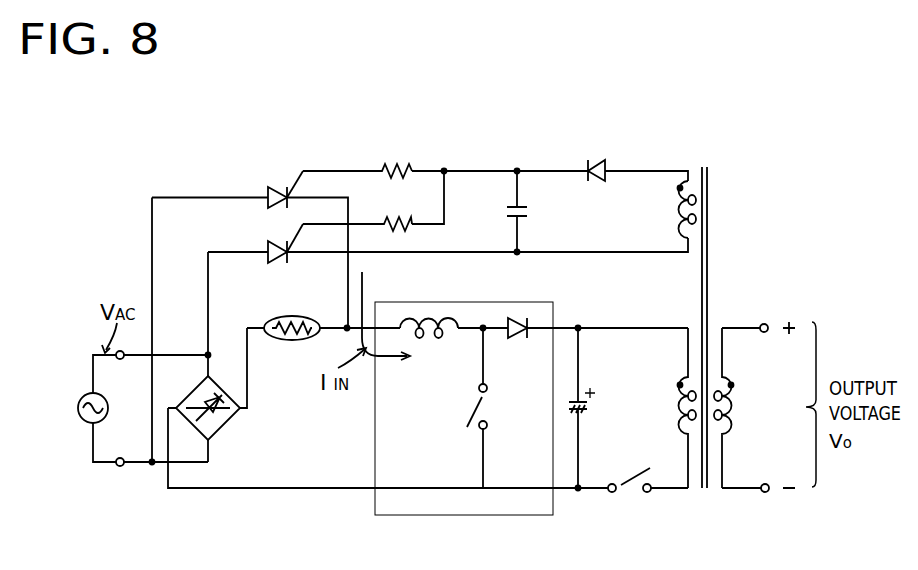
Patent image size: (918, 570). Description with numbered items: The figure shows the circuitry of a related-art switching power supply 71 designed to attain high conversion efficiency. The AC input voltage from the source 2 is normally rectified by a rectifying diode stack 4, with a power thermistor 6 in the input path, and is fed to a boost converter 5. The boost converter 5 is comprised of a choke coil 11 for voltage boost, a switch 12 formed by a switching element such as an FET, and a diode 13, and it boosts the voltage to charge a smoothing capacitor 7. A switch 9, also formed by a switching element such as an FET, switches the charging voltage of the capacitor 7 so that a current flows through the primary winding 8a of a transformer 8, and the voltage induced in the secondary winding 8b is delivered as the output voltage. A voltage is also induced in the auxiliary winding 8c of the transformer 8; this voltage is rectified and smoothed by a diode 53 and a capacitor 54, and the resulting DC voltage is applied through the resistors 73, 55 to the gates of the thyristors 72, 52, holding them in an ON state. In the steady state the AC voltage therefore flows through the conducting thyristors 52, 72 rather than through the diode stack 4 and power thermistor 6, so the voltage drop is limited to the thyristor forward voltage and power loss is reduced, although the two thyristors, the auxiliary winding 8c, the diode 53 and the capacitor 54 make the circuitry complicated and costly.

The power supply 71 is at (256, 133).
The resistor 73 is at (397, 165).
The resistor 55 is at (398, 218).
The thyristor 72 is at (280, 205).
The thyristor 52 is at (280, 262).
The diode 53 is at (597, 160).
The capacitor 54 is at (528, 218).
The auxiliary winding 8c is at (676, 210).
The transformer 8 is at (722, 298).
The primary winding 8a is at (677, 406).
The secondary winding 8b is at (736, 406).
The boost converter 5 is at (523, 301).
The choke coil 11 is at (430, 337).
The switch 12 is at (490, 410).
The diode 13 is at (518, 337).
The smoothing capacitor 7 is at (585, 412).
The switch 9 is at (627, 492).
The power thermistor 6 is at (293, 318).
The diode stack 4 is at (225, 426).
The AC power source 2 is at (84, 396).